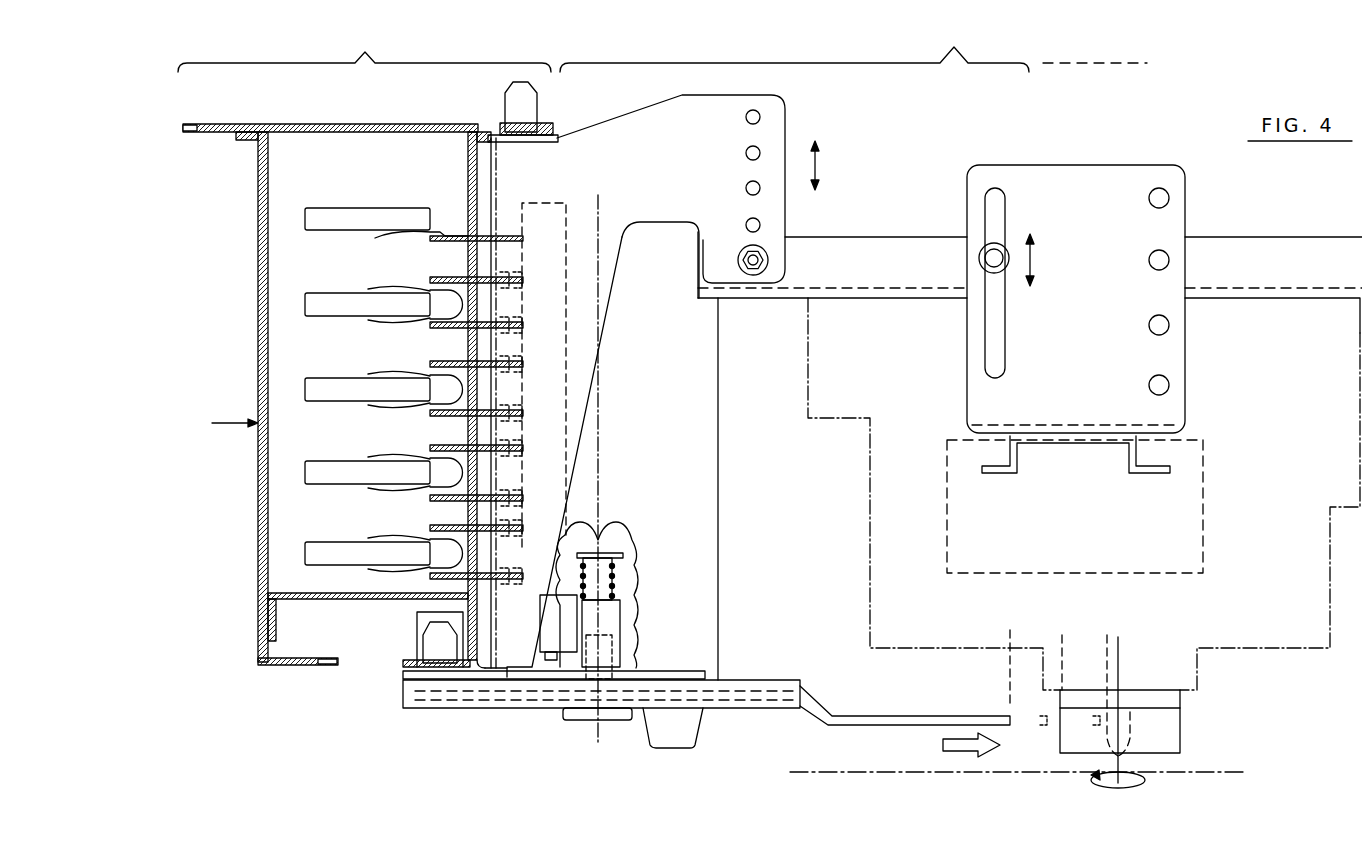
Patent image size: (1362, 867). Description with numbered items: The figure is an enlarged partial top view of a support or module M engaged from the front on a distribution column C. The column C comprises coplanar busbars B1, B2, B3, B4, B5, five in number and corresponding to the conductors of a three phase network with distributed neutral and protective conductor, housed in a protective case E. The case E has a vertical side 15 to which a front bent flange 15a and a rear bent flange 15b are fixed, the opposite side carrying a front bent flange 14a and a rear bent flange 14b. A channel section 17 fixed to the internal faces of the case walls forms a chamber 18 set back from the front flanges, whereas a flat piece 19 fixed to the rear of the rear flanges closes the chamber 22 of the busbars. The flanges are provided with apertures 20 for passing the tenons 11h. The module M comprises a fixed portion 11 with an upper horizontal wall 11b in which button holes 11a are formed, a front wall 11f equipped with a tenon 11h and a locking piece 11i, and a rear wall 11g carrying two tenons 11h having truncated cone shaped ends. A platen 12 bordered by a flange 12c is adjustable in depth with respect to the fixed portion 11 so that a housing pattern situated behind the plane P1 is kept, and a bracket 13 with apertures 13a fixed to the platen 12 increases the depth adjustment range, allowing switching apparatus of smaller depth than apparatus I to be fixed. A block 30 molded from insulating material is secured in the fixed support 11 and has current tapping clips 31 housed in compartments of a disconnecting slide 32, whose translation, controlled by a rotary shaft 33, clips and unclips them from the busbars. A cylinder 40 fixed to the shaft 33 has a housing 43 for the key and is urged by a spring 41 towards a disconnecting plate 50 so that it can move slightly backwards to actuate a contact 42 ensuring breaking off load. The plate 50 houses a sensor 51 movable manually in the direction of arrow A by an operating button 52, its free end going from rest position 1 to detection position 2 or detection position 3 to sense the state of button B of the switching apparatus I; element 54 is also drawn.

The rest position 1 is at (1010, 655).
The on or off detection position 2 is at (1062, 647).
The break detection position 3 is at (1115, 680).
The fixed portion 11 is at (593, 409).
The button holes 11a is at (746, 153).
The upper horizontal wall 11b is at (648, 187).
The front wall 11f is at (490, 680).
The rear wall 11g is at (549, 143).
The tenon 11h is at (537, 104).
The locking piece 11i is at (417, 618).
The platen 12 is at (878, 258).
The flange 12c is at (1298, 263).
The bracket 13 is at (1088, 241).
The apertures 13a is at (1169, 198).
The front bent flange 14a is at (470, 680).
The rear bent flange 14b is at (480, 141).
The vertical side 15 is at (362, 396).
The front bent flange 15a is at (330, 667).
The rear bent flange 15b is at (240, 141).
The channel section 17 is at (311, 601).
The chamber 18 is at (329, 645).
The flat piece 19 is at (342, 122).
The apertures 20 is at (205, 134).
The chamber 22 is at (286, 181).
The block 30 is at (648, 392).
The current tapping clips 31 is at (449, 418).
The disconnecting slide 32 is at (566, 243).
The rotary shaft 33 is at (603, 527).
The cylinder 40 is at (610, 612).
The spring 41 is at (620, 575).
The contact 42 is at (555, 606).
The housing 43 is at (604, 640).
The disconnecting plate 50 is at (556, 745).
The sensor 51 is at (902, 720).
The operating button 52 is at (660, 742).
The base 54 is at (757, 714).
The arrow A is at (945, 748).
The button B is at (1182, 712).
The busbar B1 is at (326, 232).
The busbar B2 is at (326, 317).
The busbar B3 is at (326, 402).
The busbar B4 is at (328, 485).
The busbar B5 is at (325, 560).
The distribution column C is at (364, 50).
The protective case E is at (226, 422).
The switching apparatus I is at (1215, 527).
The support or module M is at (853, 46).
The plane P1 is at (1032, 777).